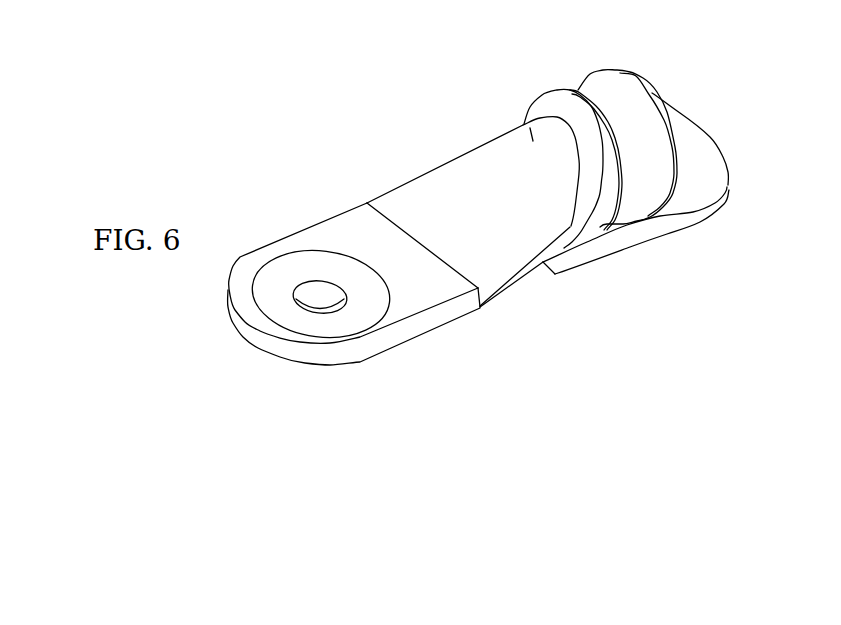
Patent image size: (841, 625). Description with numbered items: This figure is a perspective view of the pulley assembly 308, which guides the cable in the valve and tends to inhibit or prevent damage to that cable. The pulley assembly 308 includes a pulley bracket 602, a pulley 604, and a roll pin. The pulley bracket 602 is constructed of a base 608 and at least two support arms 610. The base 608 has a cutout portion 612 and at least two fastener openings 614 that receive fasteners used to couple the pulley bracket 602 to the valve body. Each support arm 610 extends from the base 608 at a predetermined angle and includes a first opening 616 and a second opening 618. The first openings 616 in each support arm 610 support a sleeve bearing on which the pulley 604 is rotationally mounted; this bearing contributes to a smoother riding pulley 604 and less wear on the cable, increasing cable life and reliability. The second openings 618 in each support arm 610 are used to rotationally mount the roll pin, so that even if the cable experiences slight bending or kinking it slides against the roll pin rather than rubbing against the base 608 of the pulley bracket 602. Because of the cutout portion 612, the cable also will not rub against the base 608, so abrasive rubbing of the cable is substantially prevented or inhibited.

The pulley assembly 308 is at (708, 88).
The pulley bracket 602 is at (740, 165).
The pulley 604 is at (615, 83).
The base 608 is at (393, 335).
The support arm 610 is at (467, 182).
The cutout portion 612 is at (537, 281).
The fastener opening 614 is at (318, 303).
The first opening 616 is at (523, 125).
The second opening 618 is at (380, 197).